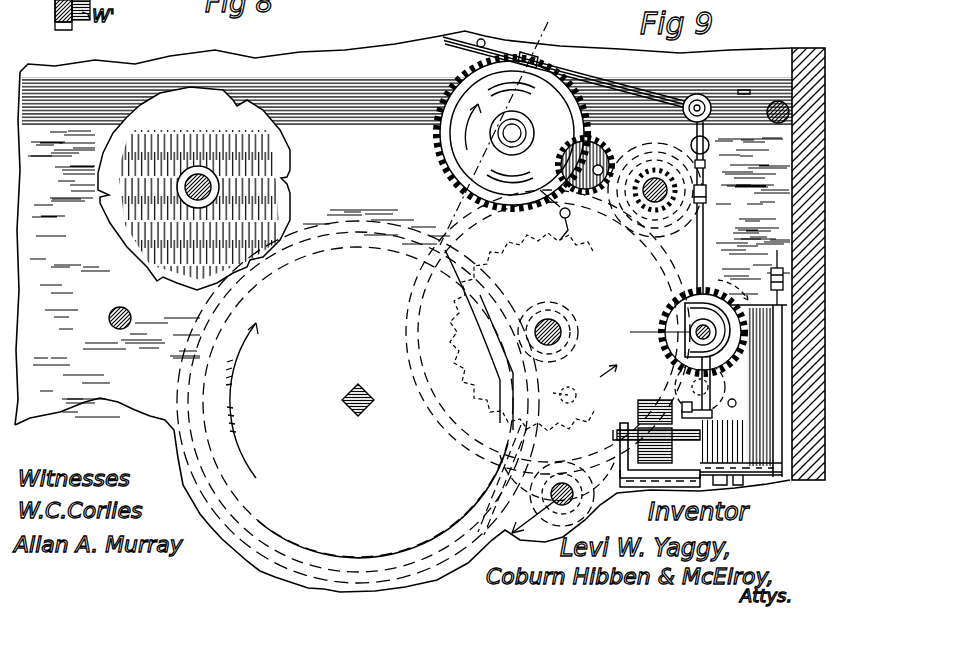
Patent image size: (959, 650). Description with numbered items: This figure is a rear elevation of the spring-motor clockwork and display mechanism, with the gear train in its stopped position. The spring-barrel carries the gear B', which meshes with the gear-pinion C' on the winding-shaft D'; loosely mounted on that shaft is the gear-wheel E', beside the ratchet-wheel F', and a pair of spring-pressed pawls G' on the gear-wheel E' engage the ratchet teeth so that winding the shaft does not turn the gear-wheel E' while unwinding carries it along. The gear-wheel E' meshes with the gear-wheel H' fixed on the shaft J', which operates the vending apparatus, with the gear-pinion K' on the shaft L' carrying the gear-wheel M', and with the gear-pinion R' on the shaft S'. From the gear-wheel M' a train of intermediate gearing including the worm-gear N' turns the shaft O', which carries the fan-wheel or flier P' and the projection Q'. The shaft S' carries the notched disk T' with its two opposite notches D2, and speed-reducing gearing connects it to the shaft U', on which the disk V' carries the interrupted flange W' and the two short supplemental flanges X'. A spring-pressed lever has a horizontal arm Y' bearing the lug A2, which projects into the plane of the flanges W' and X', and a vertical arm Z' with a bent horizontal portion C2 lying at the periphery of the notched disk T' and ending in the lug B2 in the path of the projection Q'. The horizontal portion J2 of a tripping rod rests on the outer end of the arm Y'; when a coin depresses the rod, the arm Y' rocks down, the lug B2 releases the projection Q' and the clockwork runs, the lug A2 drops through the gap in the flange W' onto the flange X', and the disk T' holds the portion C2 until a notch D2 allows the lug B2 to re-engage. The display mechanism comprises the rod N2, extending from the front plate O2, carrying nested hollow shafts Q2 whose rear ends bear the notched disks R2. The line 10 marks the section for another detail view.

The front plate O2 is at (403, 311).
The notched disk R2 is at (194, 188).
The nested hollow shaft Q2 is at (212, 188).
The rod N2 is at (200, 177).
The flange W' is at (495, 133).
The supplemental flange X' is at (511, 133).
The shaft U' is at (524, 132).
The disk V' is at (472, 139).
The horizontal arm Y' is at (577, 79).
The arm or lug A2 is at (538, 60).
The horizontal portion of tripping rod J2 is at (480, 36).
The axis line 10 is at (500, 124).
The shaft S' is at (655, 211).
The gear-pinion R' is at (717, 150).
The vertical arm Z' is at (720, 213).
The notched disk T' is at (719, 209).
The notch D2 is at (706, 165).
The horizontal portion C2 is at (706, 200).
The gear-wheel M' is at (694, 349).
The shaft L' is at (648, 334).
The gear-pinion K' is at (761, 277).
The lug B2 is at (705, 400).
The fan-wheel or flier P' is at (638, 430).
The projection Q' is at (658, 402).
The shaft O' is at (656, 450).
The worm-gear N' is at (713, 478).
The gear B' is at (358, 390).
The gear-pinion C' is at (555, 311).
The winding-shaft D' is at (564, 324).
The ratchet-wheel F' is at (531, 332).
The gear-wheel E' is at (548, 332).
The spring-pressed pawl G' is at (552, 306).
The gear-wheel H' is at (527, 490).
The shaft J' is at (517, 488).